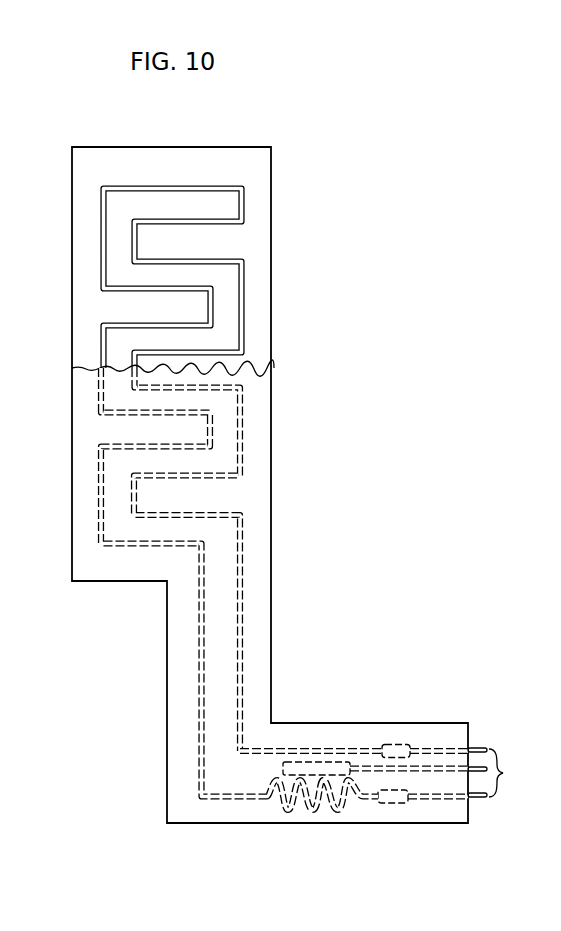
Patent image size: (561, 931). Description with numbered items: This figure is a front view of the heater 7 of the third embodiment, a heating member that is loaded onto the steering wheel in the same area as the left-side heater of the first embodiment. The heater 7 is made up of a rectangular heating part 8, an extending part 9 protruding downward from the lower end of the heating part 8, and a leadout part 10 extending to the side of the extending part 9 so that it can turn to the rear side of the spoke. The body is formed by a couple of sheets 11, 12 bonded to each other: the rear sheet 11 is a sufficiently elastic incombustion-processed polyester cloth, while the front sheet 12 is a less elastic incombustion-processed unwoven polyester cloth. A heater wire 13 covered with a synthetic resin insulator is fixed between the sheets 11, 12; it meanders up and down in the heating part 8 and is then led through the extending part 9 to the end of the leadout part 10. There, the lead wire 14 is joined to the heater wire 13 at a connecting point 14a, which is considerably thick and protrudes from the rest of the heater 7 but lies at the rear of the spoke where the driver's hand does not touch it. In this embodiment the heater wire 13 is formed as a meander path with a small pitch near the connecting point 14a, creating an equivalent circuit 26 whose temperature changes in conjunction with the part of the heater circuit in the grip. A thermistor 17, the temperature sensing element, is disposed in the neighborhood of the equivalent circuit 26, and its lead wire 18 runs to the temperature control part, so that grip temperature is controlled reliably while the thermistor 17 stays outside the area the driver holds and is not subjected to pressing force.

The heater 7 is at (282, 246).
The heating part 8 is at (176, 268).
The extending part 9 is at (262, 629).
The leadout part 10 is at (359, 723).
The sheet 11 is at (209, 582).
The sheet 12 is at (272, 176).
The heater wire 13 is at (100, 322).
The lead wire 14 is at (501, 772).
The connecting point 14a is at (394, 745).
The thermistor 17 is at (311, 762).
The lead wire 18 is at (440, 772).
The equivalent circuit 26 is at (289, 812).